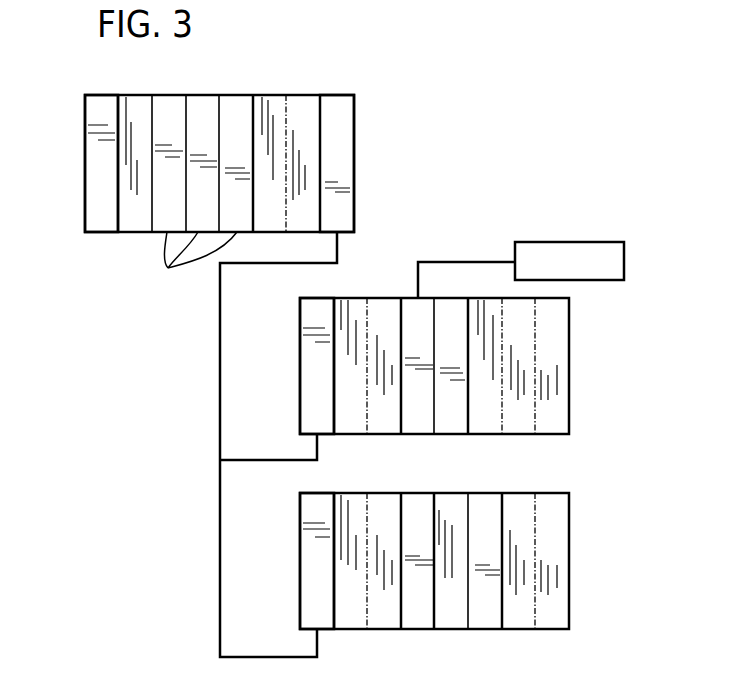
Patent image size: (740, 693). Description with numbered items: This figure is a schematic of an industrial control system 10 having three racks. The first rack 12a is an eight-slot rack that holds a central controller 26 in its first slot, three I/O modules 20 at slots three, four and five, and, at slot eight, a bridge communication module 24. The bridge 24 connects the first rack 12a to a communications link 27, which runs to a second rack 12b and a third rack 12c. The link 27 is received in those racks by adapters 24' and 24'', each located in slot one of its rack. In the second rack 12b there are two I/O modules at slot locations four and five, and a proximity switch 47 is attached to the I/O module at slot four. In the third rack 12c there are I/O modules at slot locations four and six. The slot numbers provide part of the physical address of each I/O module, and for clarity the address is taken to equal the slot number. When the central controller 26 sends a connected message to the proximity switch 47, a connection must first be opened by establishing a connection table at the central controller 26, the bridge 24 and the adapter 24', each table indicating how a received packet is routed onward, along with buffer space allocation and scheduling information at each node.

The industrial control system 10 is at (372, 73).
The rack 12a is at (203, 95).
The rack 12b is at (569, 335).
The rack 12c is at (569, 530).
The I/O modules 20 is at (191, 264).
The bridge communication module 24 is at (367, 163).
The adapter 24' is at (347, 343).
The adapter 24'' is at (356, 541).
The central controller 26 is at (102, 95).
The communications link 27 is at (219, 345).
The proximity switch 47 is at (572, 242).